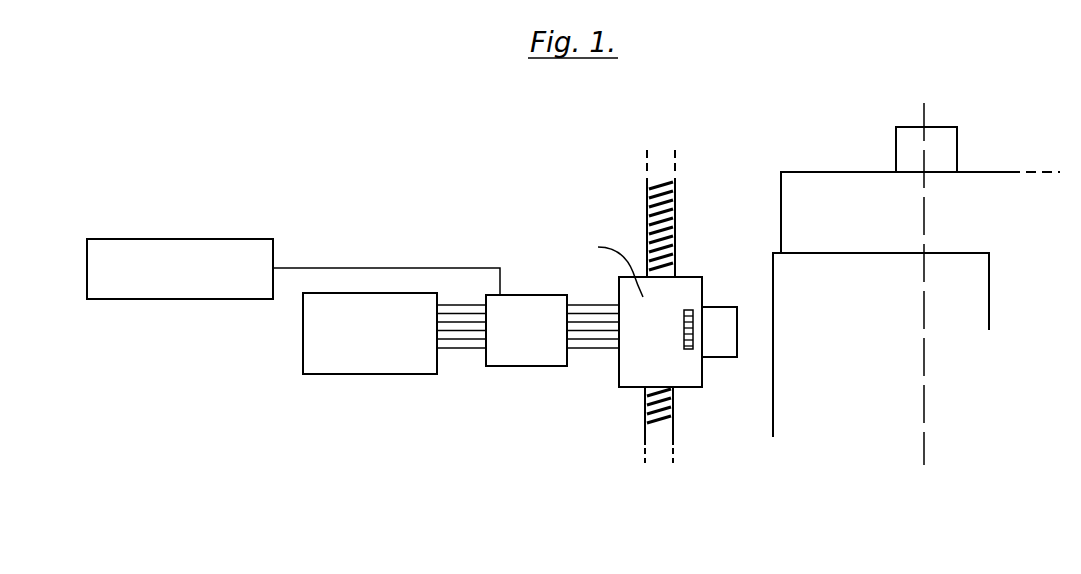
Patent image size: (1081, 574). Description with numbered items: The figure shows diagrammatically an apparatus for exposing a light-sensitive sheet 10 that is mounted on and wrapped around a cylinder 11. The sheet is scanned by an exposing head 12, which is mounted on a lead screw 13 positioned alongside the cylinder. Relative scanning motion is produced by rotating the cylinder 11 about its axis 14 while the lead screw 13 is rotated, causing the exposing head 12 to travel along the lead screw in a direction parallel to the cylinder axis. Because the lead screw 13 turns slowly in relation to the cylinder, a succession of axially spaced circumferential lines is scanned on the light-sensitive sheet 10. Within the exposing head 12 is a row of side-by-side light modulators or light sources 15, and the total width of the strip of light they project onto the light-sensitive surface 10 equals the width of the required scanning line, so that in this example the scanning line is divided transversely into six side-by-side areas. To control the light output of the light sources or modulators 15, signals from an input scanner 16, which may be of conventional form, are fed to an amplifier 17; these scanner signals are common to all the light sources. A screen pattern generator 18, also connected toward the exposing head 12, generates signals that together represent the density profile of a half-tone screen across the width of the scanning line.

The light-sensitive sheet 10 is at (826, 262).
The cylinder 11 is at (815, 179).
The exposing head 12 is at (624, 385).
The lead screw 13 is at (660, 421).
The cylinder axis 14 is at (928, 120).
The light modulators or light sources 15 is at (688, 308).
The input scanner 16 is at (175, 239).
The amplifier 17 is at (535, 368).
The screen pattern generator 18 is at (372, 375).